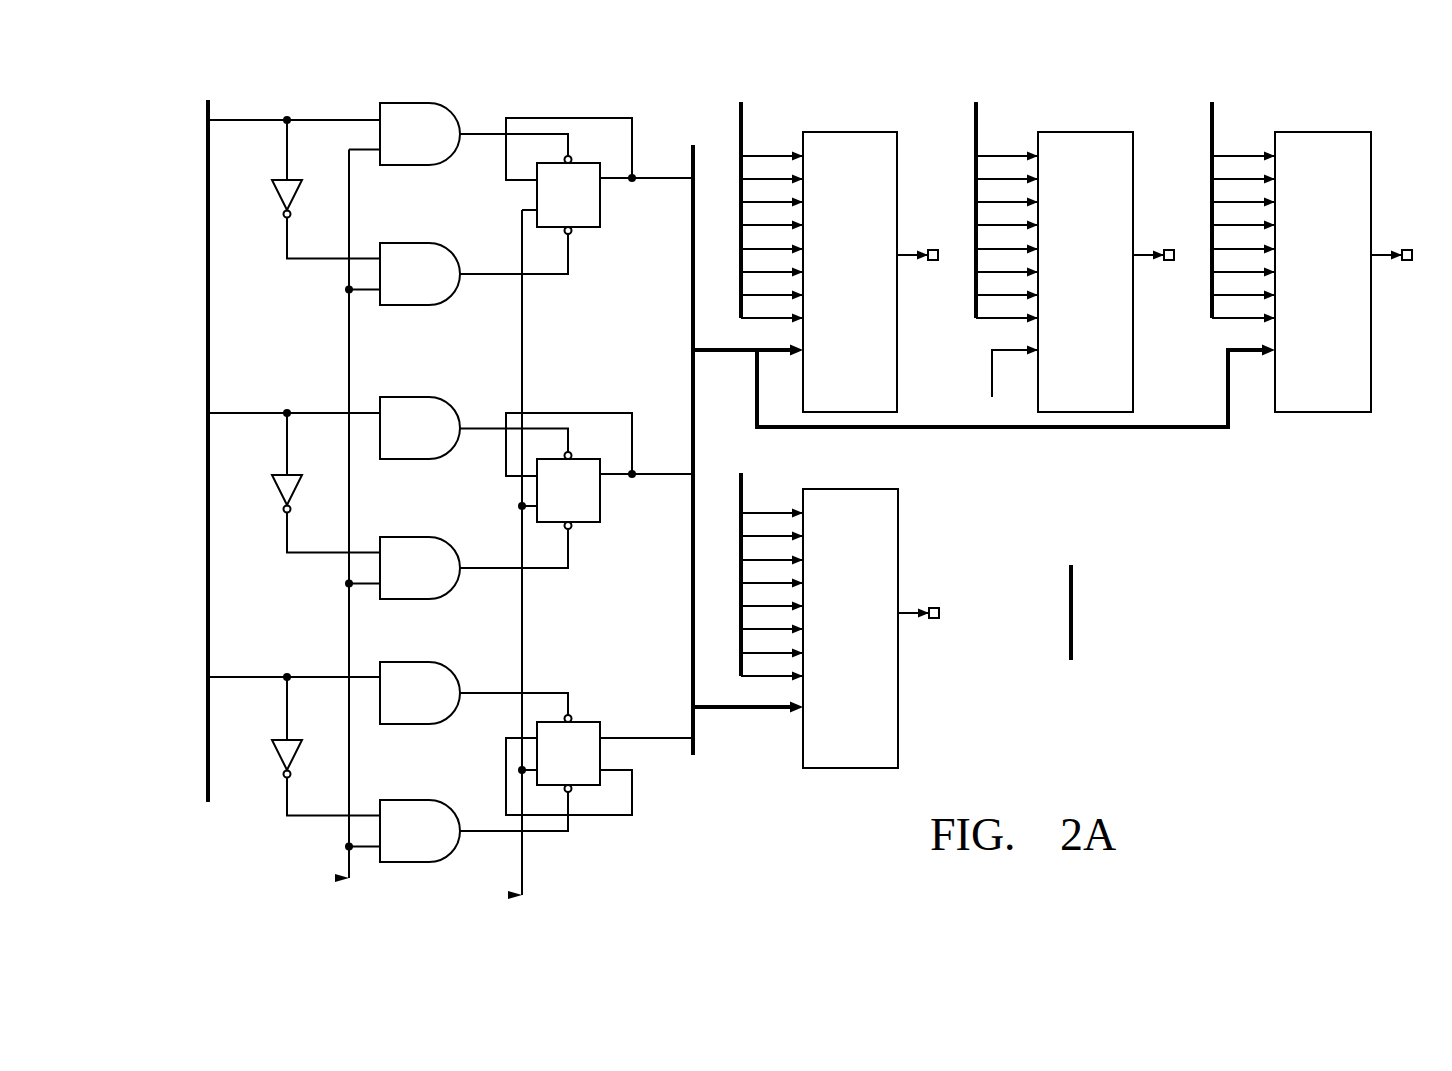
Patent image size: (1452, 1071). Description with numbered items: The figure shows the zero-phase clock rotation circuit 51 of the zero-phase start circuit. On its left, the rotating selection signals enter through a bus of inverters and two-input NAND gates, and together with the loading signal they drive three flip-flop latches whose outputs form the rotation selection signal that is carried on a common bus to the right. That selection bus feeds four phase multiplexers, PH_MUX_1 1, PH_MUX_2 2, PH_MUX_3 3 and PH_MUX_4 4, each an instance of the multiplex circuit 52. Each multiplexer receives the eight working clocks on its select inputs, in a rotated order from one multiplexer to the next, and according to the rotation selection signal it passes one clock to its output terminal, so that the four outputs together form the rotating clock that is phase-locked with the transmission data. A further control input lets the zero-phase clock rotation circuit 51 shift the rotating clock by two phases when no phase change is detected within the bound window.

The zero-phase clock rotation circuit 51 is at (1197, 751).
The multiplex circuit 52 is at (1058, 422).
The phase multiplexer PH_MUX_ 1 is at (821, 244).
The phase multiplexer PH_MUX_ 2 is at (1064, 244).
The phase multiplexer PH_MUX_ 3 is at (1311, 244).
The phase multiplexer PH_MUX_ 4 is at (839, 607).